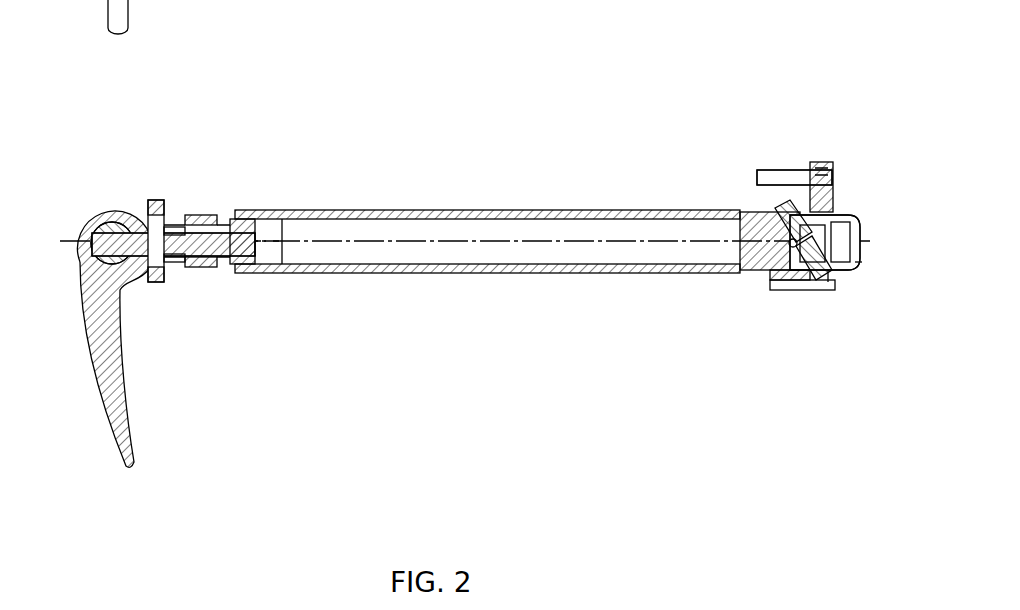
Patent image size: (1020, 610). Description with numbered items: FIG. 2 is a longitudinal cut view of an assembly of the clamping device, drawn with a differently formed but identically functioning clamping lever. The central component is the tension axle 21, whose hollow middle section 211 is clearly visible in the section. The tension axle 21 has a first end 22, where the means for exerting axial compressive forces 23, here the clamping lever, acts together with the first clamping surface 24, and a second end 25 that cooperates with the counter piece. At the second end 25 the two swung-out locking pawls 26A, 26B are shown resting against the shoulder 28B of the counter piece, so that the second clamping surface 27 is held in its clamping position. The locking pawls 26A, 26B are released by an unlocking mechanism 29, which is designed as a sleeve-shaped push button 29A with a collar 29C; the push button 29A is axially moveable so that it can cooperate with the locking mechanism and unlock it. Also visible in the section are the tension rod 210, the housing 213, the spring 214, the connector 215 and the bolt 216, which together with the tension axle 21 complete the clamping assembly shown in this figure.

The tension axle 21 is at (513, 112).
The middle section 211 is at (533, 268).
The first end 22 is at (232, 405).
The means for exerting axial compressive forces 23 is at (120, 182).
The first clamping surface 24 is at (168, 283).
The second end 25 is at (697, 146).
The locking pawl 26A is at (812, 282).
The locking pawl 26B is at (797, 208).
The second clamping surface 27 is at (770, 278).
The shoulder 28B is at (781, 210).
The end housing 29 is at (855, 178).
The button 29A is at (848, 268).
The collar 29C is at (830, 282).
The tension rod 210 is at (234, 210).
The housing 213 is at (772, 284).
The spring 214 is at (155, 197).
The connector 215 is at (194, 210).
The bolt 216 is at (762, 170).